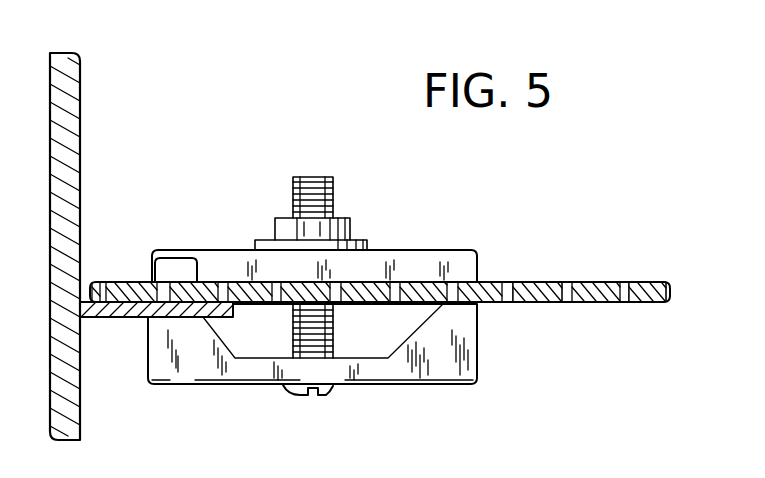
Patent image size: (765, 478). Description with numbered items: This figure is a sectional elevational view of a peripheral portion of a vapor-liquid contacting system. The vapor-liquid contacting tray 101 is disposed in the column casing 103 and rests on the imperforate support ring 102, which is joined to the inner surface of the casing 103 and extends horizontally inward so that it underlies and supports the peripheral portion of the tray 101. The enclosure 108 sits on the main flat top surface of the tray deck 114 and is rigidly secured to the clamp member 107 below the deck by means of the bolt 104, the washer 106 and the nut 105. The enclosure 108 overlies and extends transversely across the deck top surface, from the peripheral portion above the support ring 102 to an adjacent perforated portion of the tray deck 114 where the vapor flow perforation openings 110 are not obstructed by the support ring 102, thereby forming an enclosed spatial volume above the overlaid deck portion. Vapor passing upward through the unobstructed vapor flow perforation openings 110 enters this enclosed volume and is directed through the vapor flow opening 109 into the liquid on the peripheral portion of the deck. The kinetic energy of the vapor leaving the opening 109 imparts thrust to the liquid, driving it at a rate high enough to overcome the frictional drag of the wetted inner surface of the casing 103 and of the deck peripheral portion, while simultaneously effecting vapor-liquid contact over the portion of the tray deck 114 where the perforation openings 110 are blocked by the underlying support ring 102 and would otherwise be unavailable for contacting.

The vapor-liquid contacting tray 101 is at (540, 303).
The imperforate support ring 102 is at (117, 318).
The casing 103 is at (80, 150).
The bolt 104 is at (333, 181).
The nut 105 is at (350, 230).
The washer 106 is at (296, 244).
The clamp member 107 is at (447, 373).
The enclosure 108 is at (460, 257).
The vapor flow opening 109 is at (177, 268).
The vapor flow perforation openings 110 is at (625, 282).
The tray deck 114 is at (531, 282).